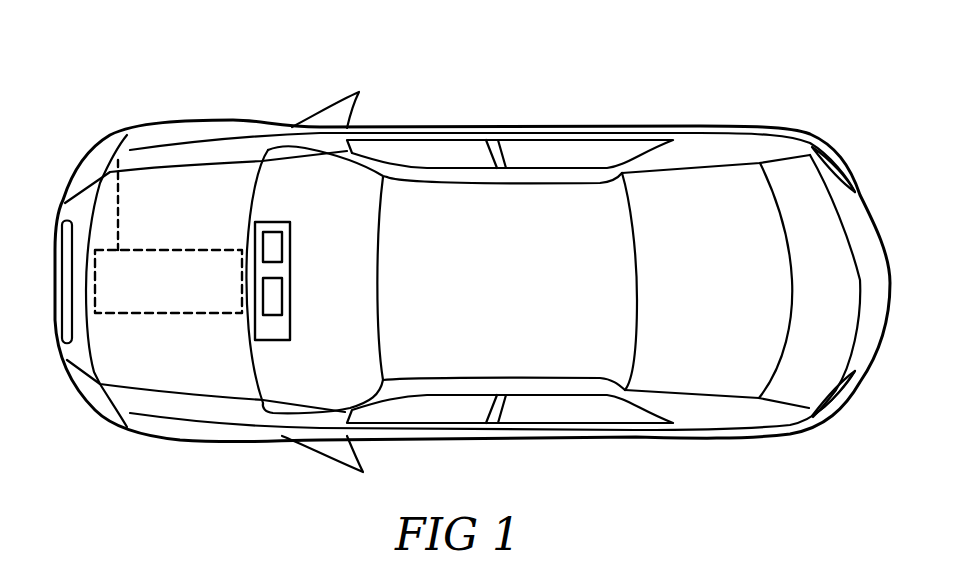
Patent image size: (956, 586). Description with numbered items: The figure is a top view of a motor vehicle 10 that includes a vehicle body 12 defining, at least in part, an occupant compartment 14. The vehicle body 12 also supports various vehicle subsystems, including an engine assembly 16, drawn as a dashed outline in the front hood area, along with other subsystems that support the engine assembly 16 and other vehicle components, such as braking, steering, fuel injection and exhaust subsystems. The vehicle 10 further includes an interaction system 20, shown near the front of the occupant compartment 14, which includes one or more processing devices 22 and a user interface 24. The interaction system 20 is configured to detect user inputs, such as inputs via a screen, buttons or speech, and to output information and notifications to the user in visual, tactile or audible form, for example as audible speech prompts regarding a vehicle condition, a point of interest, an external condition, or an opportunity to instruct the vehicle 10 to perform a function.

The motor vehicle 10 is at (141, 74).
The vehicle body 12 is at (480, 110).
The occupant compartment 14 is at (540, 366).
The engine assembly 16 is at (118, 160).
The interaction system 20 is at (290, 178).
The processing device 22 is at (272, 248).
The user interface 24 is at (272, 298).